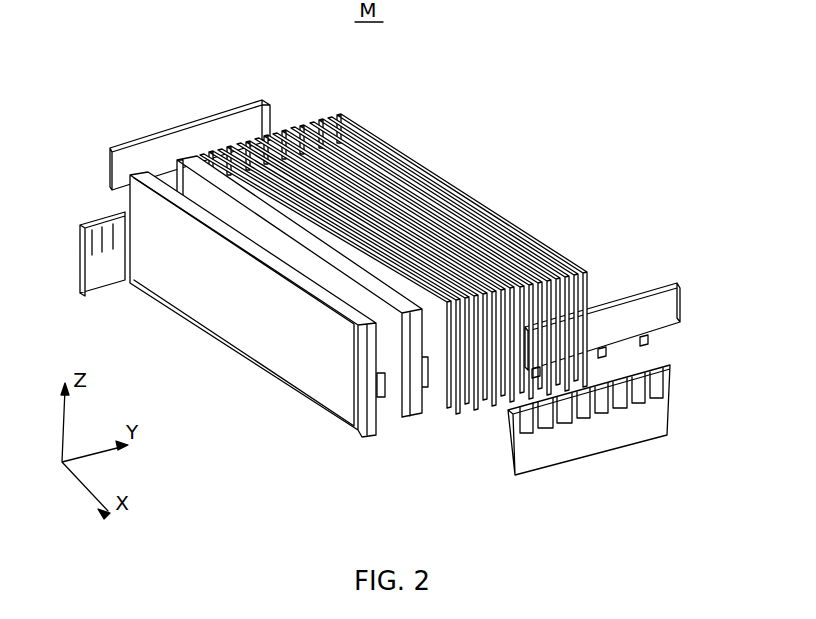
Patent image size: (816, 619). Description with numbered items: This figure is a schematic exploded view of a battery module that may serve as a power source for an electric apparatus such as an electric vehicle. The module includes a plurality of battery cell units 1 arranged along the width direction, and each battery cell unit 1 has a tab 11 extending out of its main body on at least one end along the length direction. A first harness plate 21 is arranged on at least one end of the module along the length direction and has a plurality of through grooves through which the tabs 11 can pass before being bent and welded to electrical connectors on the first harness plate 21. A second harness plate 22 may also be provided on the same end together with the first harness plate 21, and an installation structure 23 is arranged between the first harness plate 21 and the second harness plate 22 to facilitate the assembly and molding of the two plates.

The battery cell unit 1 is at (335, 392).
The tab 11 is at (457, 407).
The first harness plate 21 is at (95, 220).
The second harness plate 22 is at (152, 145).
The installation structure 23 is at (665, 370).